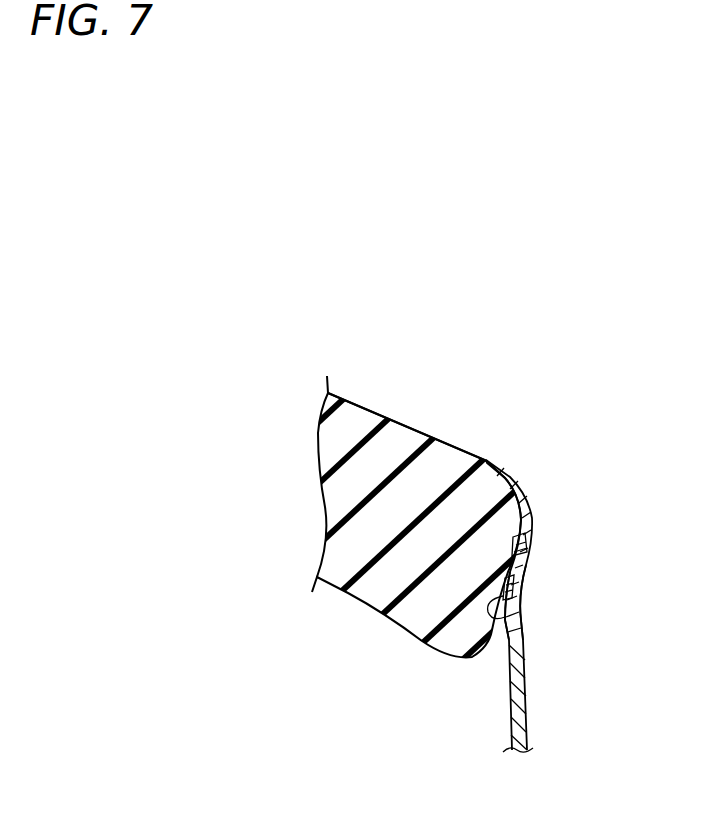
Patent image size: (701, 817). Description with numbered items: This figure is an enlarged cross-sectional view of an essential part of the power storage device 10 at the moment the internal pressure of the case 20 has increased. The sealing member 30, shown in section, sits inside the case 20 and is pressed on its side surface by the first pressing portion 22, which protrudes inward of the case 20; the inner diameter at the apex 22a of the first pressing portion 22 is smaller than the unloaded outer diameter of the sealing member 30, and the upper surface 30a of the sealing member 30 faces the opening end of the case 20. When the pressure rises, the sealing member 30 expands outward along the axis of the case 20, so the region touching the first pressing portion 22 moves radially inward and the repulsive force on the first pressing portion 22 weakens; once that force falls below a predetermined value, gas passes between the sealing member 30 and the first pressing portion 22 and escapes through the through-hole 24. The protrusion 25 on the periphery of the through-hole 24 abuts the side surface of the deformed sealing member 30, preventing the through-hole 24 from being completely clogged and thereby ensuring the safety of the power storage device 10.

The power storage device 10 is at (485, 372).
The case 20 is at (537, 721).
The first pressing portion 22 is at (518, 597).
The apex of the first pressing portion 22a is at (513, 620).
The through-hole 24 is at (515, 558).
The protrusion 25 is at (528, 537).
The sealing member 30 is at (432, 455).
The upper surface of the sealing member 30a is at (374, 412).